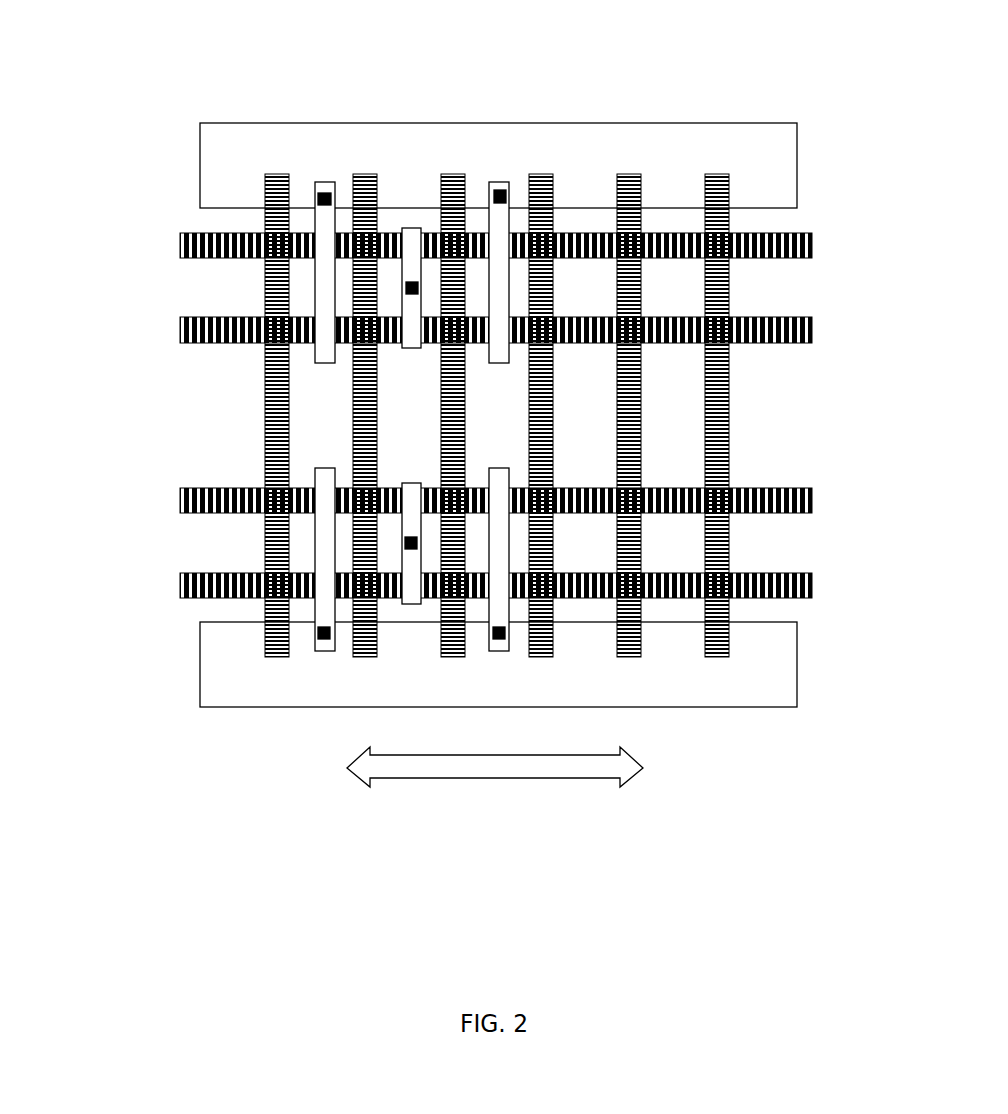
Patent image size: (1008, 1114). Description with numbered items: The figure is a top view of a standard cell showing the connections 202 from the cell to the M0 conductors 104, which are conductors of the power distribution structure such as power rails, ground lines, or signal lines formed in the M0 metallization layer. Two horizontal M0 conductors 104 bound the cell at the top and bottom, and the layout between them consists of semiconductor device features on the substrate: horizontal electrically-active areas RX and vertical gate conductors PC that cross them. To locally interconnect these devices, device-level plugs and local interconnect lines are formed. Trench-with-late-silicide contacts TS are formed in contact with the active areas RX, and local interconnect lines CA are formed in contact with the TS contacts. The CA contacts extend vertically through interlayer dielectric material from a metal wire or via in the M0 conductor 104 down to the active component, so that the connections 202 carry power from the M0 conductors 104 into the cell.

The first conductor (M0) 104 is at (200, 166).
The connections 202 is at (160, 432).
The trench-with-late-silicide contact TS is at (326, 182).
The local interconnect line (CA contact) CA is at (499, 182).
The gate conductor PC is at (540, 172).
The electrically-active area RX is at (812, 585).